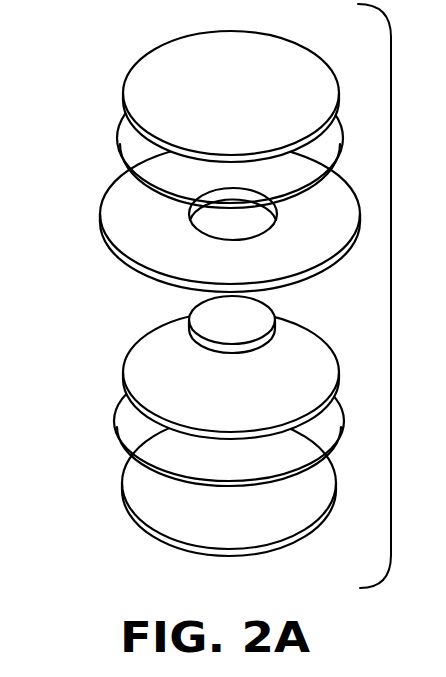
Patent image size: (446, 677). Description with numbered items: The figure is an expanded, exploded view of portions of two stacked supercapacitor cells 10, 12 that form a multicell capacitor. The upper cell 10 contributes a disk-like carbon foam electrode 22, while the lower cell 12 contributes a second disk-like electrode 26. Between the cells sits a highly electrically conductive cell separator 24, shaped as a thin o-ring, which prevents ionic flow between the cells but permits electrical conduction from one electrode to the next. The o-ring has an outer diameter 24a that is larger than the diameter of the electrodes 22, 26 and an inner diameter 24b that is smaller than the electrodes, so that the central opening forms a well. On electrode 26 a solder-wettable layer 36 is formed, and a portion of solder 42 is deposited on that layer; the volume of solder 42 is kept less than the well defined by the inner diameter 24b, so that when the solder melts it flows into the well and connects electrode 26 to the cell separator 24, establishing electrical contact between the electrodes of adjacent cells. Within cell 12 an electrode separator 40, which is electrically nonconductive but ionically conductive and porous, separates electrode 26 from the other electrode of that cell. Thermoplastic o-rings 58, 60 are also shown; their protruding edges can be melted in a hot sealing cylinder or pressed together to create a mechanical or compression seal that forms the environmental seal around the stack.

The cell 10 is at (218, 294).
The cell 12 is at (220, 440).
The electrode 22 is at (241, 92).
The cell separator 24 is at (298, 266).
The outer diameter 24a is at (202, 193).
The inner diameter 24b is at (161, 243).
The electrode 26 is at (199, 421).
The solder-wettable layer 36 is at (306, 367).
The electrode separator 40 is at (240, 491).
The solder 42 is at (179, 324).
The thermoplastic o-ring 58 is at (195, 140).
The thermoplastic o-ring 60 is at (198, 465).